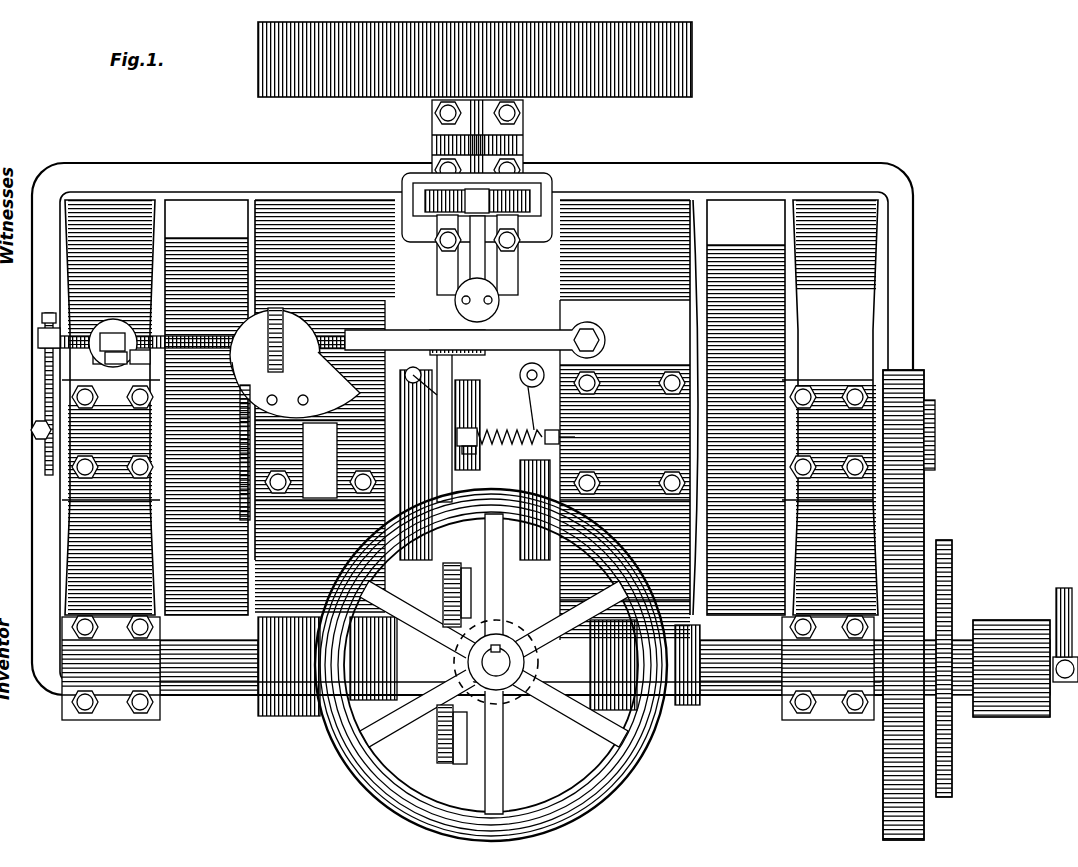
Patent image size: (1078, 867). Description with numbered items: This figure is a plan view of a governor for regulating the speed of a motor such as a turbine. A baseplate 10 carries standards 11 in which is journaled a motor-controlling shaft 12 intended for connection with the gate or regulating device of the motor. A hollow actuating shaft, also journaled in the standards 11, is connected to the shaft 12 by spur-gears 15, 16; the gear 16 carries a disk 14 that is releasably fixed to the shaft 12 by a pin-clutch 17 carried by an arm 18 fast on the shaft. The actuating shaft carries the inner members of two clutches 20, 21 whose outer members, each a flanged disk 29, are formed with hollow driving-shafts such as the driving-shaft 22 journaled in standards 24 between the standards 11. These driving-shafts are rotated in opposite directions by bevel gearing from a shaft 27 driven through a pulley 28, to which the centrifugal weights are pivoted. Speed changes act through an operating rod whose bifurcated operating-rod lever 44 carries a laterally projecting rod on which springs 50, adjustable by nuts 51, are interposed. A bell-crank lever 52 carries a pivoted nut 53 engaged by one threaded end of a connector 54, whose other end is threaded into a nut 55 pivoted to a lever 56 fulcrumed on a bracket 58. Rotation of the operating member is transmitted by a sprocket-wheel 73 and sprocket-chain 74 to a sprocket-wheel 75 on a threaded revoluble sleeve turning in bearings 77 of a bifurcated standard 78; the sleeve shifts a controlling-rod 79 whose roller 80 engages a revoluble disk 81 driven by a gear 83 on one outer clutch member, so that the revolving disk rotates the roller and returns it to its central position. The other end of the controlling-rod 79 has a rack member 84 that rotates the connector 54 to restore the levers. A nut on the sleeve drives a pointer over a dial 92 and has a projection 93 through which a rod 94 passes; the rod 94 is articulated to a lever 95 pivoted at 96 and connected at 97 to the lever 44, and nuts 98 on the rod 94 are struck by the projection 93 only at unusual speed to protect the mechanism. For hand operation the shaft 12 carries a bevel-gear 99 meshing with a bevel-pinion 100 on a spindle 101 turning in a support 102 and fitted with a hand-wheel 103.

The baseplate 10 is at (905, 325).
The standards 11 is at (117, 200).
The motor-controlling shaft 12 is at (200, 682).
The disk 14 is at (948, 602).
The spur-gear 15 is at (920, 400).
The spur-gear 16 is at (915, 545).
The pin-clutch 17 is at (1064, 688).
The arm 18 is at (1000, 628).
The clutch 20 is at (744, 258).
The clutch 21 is at (196, 252).
The driving-shaft 22 is at (686, 388).
The standards 24 is at (320, 205).
The shaft 27 is at (440, 182).
The pulley 28 is at (640, 97).
The flanged disk 29 is at (495, 454).
The operating-rod lever 44 is at (466, 520).
The springs 50 is at (512, 428).
The nuts 51 is at (570, 432).
The bell-crank lever 52 is at (533, 396).
The nut 53 is at (463, 420).
The connector 54 is at (440, 258).
The nut 55 is at (477, 201).
The lever 56 is at (520, 186).
The bracket 58 is at (516, 262).
The sprocket-wheel 73 is at (45, 450).
The sprocket-chain 74 is at (45, 376).
The sprocket-wheel 75 is at (43, 326).
The bearings 77 is at (137, 364).
The bifurcated standard 78 is at (116, 366).
The controlling-rod 79 is at (350, 333).
The roller 80 is at (280, 316).
The revoluble disk 81 is at (305, 380).
The gear 83 is at (250, 458).
The rack member 84 is at (505, 342).
The dial 92 is at (40, 340).
The projection 93 is at (122, 332).
The rod 94 is at (210, 338).
The lever 95 is at (437, 380).
The pivot 96 is at (100, 365).
The connection 97 is at (456, 545).
The nuts 98 is at (102, 328).
The bevel-gear 99 is at (436, 738).
The bevel-pinion 100 is at (512, 700).
The spindle 101 is at (504, 652).
The support 102 is at (388, 642).
The hand-wheel 103 is at (538, 808).